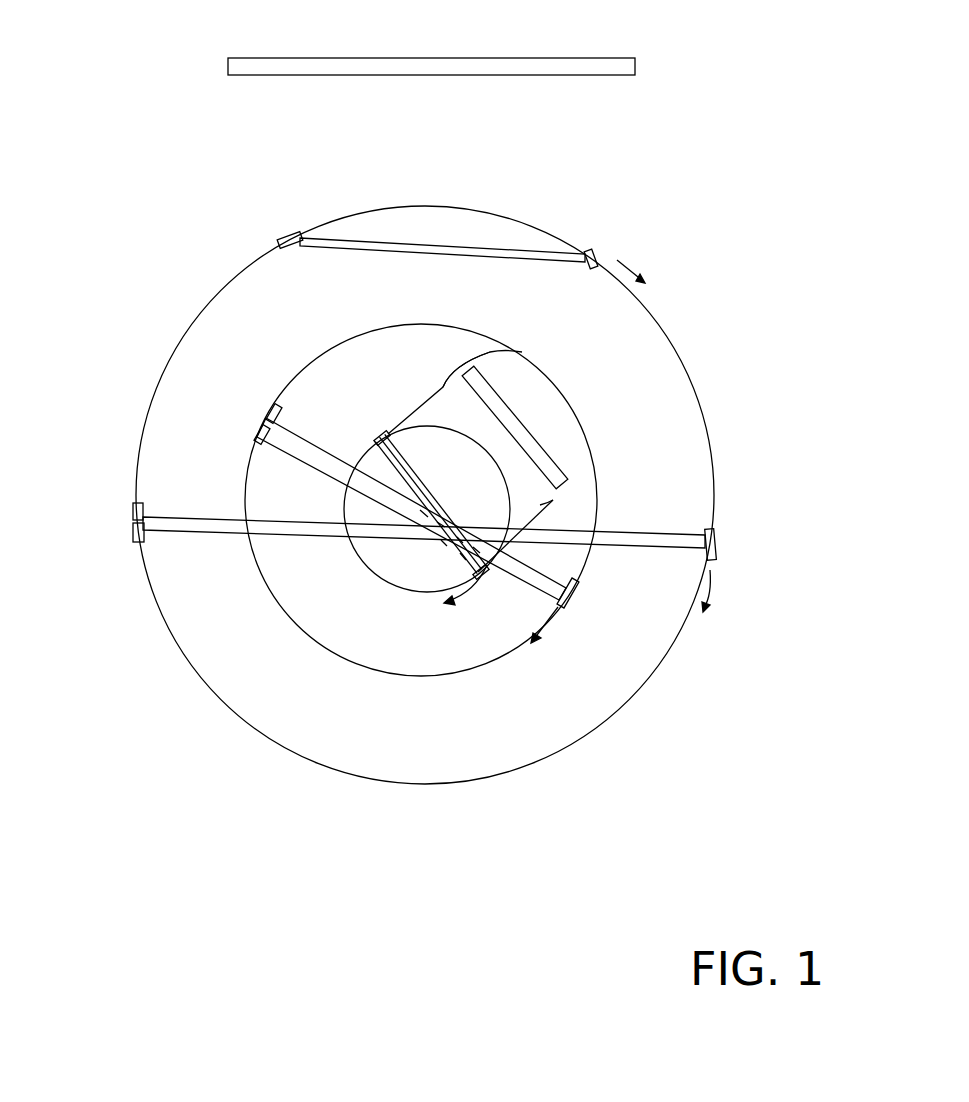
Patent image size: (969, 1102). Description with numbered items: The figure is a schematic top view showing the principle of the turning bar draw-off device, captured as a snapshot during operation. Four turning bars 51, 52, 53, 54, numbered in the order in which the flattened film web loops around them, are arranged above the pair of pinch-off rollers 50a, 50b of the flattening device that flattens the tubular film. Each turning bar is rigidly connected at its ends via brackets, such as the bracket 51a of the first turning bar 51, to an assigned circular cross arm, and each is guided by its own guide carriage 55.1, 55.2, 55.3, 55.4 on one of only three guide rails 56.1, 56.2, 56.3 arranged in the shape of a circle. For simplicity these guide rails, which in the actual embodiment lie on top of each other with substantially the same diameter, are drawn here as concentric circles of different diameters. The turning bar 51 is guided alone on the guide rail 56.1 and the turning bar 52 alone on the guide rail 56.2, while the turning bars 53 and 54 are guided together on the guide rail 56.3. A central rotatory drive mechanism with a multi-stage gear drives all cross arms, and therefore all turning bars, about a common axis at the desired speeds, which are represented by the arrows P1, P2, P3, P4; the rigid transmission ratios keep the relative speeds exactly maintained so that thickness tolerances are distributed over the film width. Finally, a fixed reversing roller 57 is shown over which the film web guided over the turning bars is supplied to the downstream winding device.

The fixed reversing roller 57 is at (607, 63).
The guide rail 56.3 is at (652, 313).
The guide rail 56.2 is at (415, 673).
The guide rail 56.1 is at (370, 568).
The turning bar 53 is at (520, 248).
The guide carriage 55.3 is at (283, 234).
The turning bar 54 is at (658, 550).
The guide carriage 55.4 is at (133, 508).
The turning bar 52 is at (530, 577).
The guide carriage 55.2 is at (267, 410).
The pinch-off roller 50a is at (417, 477).
The pinch-off roller 50b is at (472, 568).
The guide carriage 55.1 is at (381, 430).
The turning bar 51 is at (547, 462).
The bracket 51a is at (522, 352).
The arrow P1 is at (461, 596).
The arrow P2 is at (550, 636).
The arrow P3 is at (635, 260).
The arrow P4 is at (722, 596).